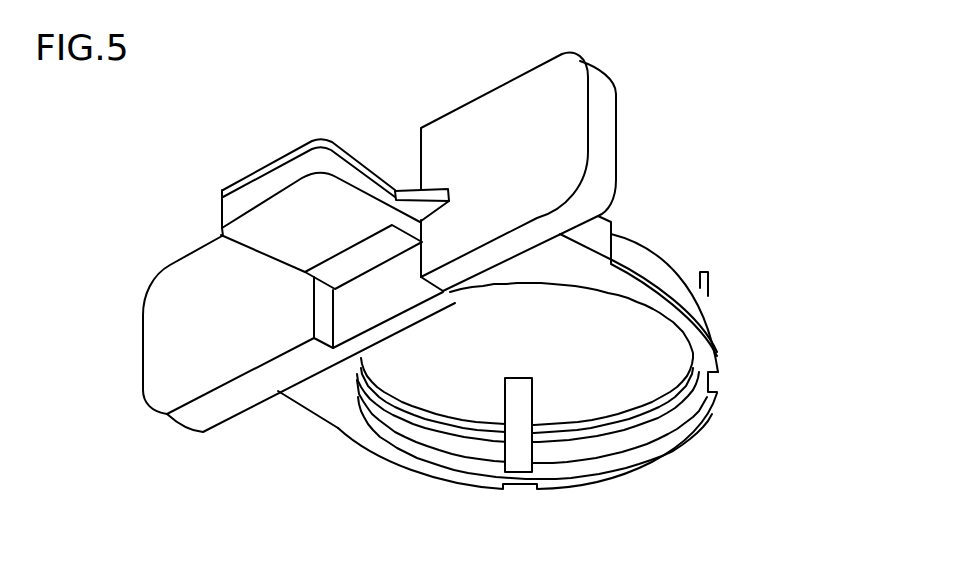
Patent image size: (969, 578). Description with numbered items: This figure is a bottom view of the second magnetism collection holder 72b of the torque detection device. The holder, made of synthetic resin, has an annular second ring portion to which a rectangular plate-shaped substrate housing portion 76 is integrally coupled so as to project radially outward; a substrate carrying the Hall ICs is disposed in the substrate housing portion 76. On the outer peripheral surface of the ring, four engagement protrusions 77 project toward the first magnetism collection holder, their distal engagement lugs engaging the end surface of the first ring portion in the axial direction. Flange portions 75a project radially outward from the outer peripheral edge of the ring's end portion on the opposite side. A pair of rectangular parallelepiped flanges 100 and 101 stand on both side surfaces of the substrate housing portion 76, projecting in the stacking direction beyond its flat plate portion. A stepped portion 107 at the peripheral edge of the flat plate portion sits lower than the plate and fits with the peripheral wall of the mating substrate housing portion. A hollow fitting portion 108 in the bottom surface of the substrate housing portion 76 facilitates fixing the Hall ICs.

The second magnetism collection holder 72b is at (820, 205).
The flange portions 75a is at (443, 472).
The engagement protrusions 77 is at (517, 392).
The flange 100 is at (172, 292).
The flange 101 is at (563, 110).
The stepped portion 107 is at (280, 160).
The substrate housing portion 76 is at (342, 197).
The fitting portion 108 is at (324, 272).